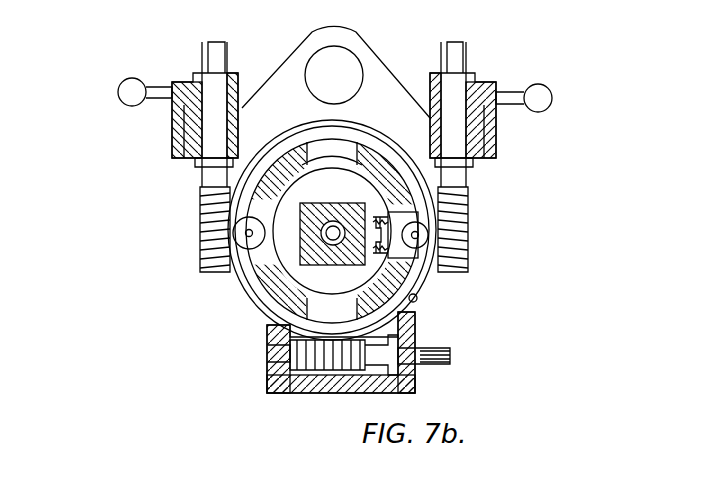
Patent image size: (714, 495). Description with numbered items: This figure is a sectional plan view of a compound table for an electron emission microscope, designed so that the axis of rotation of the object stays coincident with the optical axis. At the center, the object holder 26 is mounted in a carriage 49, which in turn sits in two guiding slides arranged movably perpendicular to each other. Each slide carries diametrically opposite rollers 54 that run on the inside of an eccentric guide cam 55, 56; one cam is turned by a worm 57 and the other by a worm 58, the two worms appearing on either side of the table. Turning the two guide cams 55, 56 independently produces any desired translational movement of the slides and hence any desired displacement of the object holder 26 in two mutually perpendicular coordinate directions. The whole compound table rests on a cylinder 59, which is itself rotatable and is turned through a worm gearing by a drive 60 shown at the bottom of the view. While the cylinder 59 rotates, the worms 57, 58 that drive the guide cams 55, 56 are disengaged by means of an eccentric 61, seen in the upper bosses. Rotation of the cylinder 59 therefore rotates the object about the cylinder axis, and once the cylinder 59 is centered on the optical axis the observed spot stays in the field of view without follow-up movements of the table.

The object holder 26 is at (332, 224).
The carriage 49 is at (329, 265).
The rollers 54 is at (424, 237).
The eccentric guide cam 55 is at (417, 300).
The eccentric guide cam 56 is at (427, 279).
The worm 57 is at (460, 222).
The worm 58 is at (199, 212).
The cylinder 59 is at (247, 298).
The drive 60 is at (437, 366).
The eccentric 61 is at (190, 88).